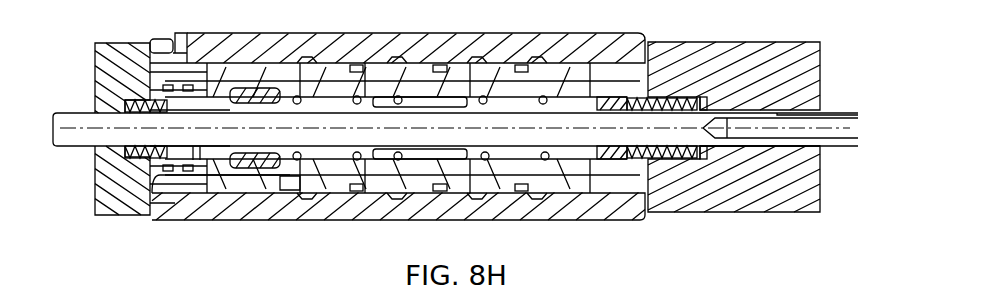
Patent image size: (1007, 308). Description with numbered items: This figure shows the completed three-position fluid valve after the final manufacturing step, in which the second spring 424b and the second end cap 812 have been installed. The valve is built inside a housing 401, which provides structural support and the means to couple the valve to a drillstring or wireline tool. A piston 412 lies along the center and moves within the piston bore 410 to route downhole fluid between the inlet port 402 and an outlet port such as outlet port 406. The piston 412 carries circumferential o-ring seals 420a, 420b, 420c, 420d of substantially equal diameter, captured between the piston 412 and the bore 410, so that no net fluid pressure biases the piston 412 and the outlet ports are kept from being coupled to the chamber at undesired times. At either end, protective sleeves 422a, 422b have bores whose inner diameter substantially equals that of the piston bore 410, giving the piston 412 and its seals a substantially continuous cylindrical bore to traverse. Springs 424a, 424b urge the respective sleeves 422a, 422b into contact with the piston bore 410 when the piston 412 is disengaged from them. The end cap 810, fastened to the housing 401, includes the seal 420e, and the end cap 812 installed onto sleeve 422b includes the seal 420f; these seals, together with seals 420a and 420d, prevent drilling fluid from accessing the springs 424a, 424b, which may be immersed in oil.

The housing 401 is at (634, 222).
The inlet port 402 is at (400, 98).
The outlet port 406 is at (484, 98).
The piston bore 410 is at (364, 100).
The piston 412 is at (297, 123).
The seal 420a is at (290, 186).
The seal 420b is at (356, 158).
The seal 420c is at (485, 158).
The seal 420d is at (546, 158).
The seal 420e is at (183, 157).
The seal 420f is at (612, 152).
The protective sleeve 422a is at (195, 155).
The protective sleeve 422b is at (544, 98).
The spring 424a is at (133, 155).
The spring 424b is at (648, 97).
The end cap 810 is at (133, 52).
The end cap 812 is at (762, 42).